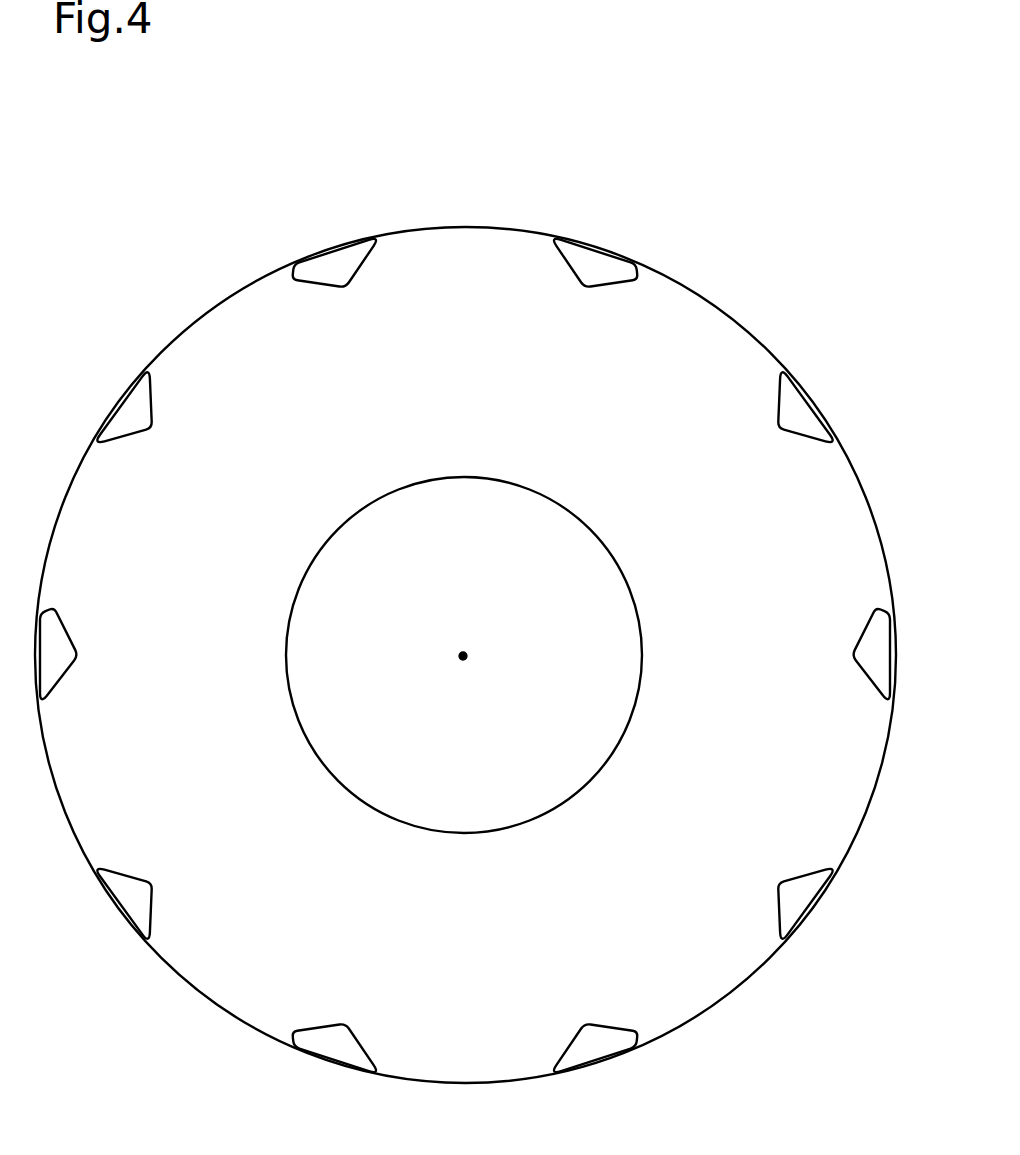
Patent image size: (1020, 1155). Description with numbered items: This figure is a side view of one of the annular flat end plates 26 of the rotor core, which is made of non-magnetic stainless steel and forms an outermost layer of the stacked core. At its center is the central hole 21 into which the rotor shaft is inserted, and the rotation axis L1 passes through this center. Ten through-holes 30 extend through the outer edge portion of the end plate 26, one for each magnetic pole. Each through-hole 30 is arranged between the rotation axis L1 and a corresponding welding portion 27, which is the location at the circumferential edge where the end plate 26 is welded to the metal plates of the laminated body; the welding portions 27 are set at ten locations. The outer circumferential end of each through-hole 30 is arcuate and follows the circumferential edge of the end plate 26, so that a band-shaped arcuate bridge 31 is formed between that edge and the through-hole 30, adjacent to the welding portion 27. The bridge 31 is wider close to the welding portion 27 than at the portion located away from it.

The end plate 26 is at (730, 197).
The central hole 21 is at (502, 828).
The rotation axis L1 is at (467, 655).
The through-hole 30 is at (362, 275).
The bridge 31 is at (319, 258).
The welding portion 27 is at (332, 246).